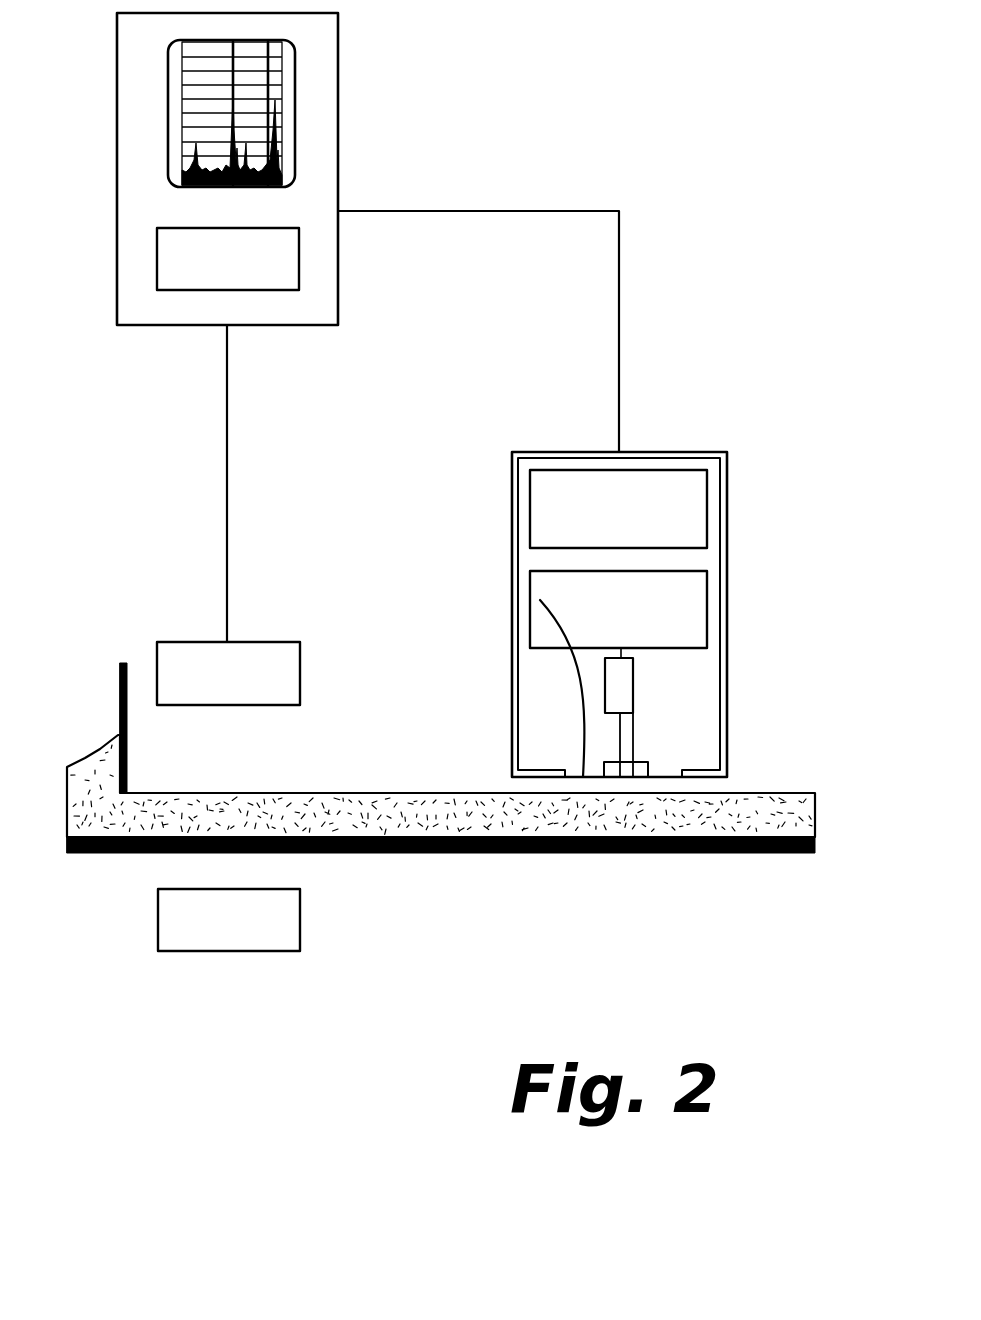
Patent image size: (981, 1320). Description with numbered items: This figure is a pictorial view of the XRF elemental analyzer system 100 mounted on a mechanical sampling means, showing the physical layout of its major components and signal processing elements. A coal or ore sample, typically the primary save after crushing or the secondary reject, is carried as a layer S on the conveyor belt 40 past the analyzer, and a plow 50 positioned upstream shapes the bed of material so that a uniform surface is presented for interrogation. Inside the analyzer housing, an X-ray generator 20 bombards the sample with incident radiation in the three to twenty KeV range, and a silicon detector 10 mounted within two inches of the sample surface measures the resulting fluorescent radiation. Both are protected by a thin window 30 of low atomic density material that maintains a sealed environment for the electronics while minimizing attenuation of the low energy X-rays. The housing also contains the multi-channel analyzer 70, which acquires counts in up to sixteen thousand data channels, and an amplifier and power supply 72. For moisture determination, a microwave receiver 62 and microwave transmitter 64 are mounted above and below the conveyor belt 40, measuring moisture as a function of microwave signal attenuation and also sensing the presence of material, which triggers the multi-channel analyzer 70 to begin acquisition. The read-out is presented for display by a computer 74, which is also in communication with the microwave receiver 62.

The XRF elemental analyzer system 100 is at (663, 400).
The silicon detector 10 is at (624, 692).
The X-ray generator 20 is at (642, 769).
The window 30 is at (540, 600).
The conveyor belt 40 is at (743, 853).
The plow 50 is at (124, 663).
The microwave receiver 62 is at (280, 670).
The microwave transmitter 64 is at (173, 921).
The multi-channel analyzer 70 is at (662, 500).
The amplifier and power supply 72 is at (661, 595).
The computer 74 is at (192, 270).
The sample layer S is at (627, 817).